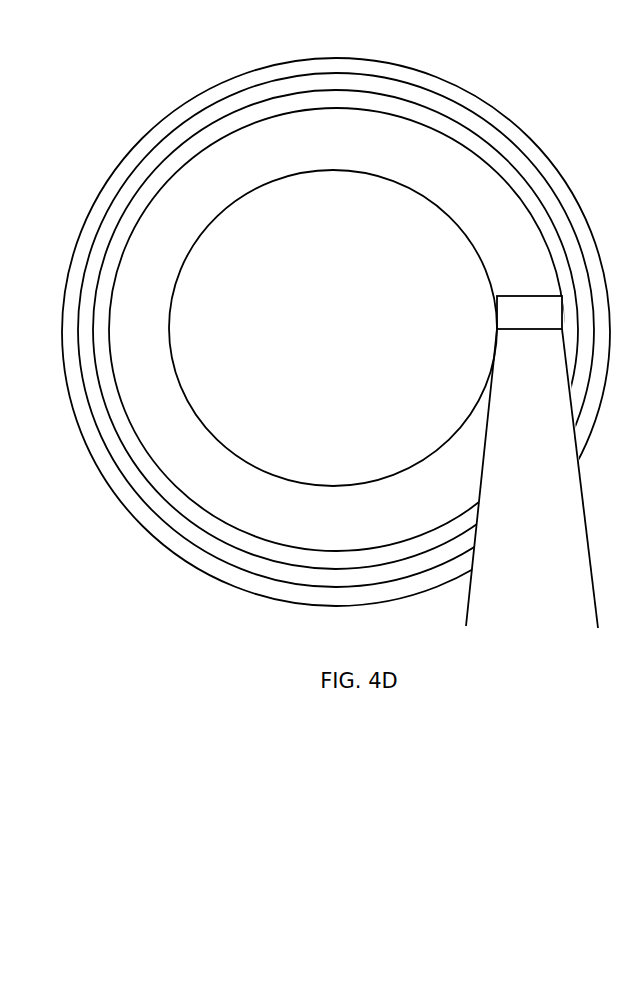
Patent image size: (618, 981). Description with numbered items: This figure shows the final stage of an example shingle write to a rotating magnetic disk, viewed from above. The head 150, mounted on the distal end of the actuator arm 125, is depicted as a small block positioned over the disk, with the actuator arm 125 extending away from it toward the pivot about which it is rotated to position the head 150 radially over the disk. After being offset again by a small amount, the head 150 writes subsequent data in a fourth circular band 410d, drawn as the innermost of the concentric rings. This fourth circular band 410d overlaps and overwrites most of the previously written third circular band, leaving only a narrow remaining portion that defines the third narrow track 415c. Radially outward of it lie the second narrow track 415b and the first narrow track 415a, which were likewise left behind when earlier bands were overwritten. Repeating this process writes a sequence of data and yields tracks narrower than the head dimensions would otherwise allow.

The first narrow track 415a is at (157, 135).
The second narrow track 415b is at (142, 167).
The third narrow track 415c is at (132, 210).
The fourth circular band 410d is at (142, 270).
The head 150 is at (497, 310).
The actuator arm 125 is at (468, 608).